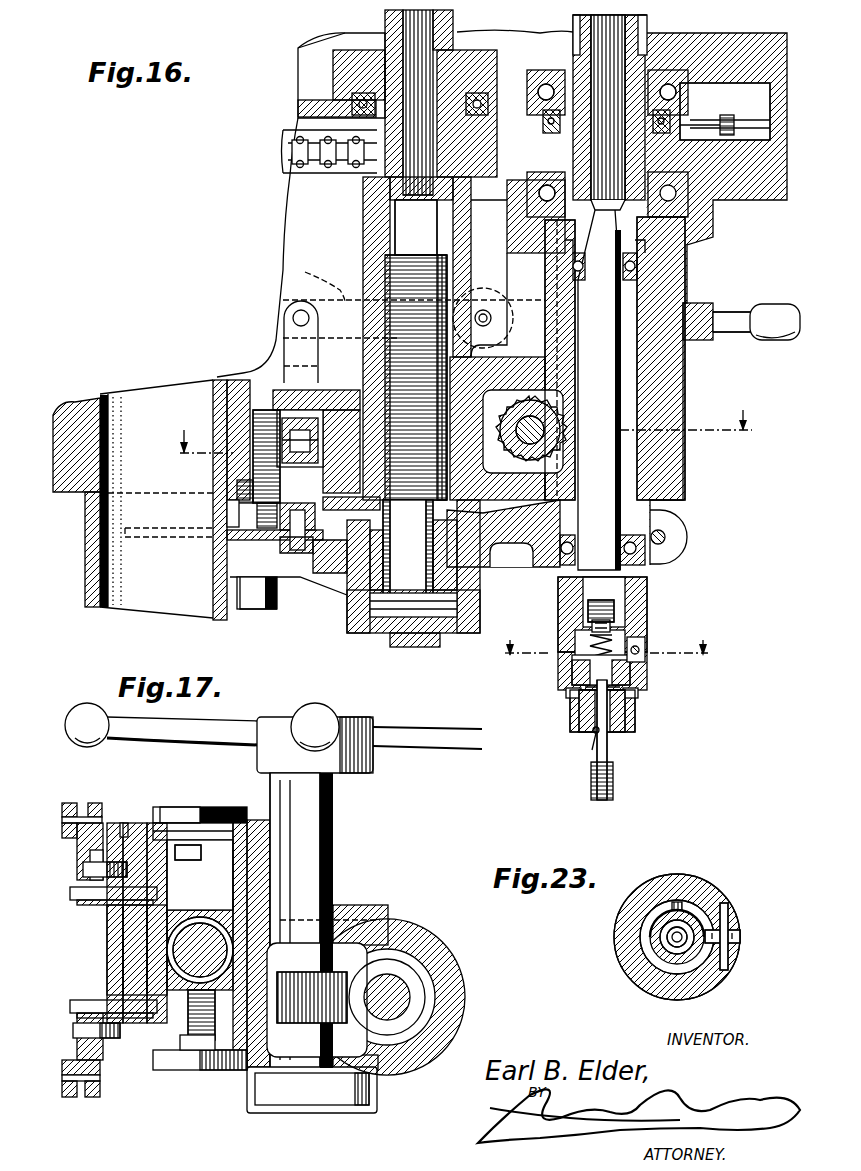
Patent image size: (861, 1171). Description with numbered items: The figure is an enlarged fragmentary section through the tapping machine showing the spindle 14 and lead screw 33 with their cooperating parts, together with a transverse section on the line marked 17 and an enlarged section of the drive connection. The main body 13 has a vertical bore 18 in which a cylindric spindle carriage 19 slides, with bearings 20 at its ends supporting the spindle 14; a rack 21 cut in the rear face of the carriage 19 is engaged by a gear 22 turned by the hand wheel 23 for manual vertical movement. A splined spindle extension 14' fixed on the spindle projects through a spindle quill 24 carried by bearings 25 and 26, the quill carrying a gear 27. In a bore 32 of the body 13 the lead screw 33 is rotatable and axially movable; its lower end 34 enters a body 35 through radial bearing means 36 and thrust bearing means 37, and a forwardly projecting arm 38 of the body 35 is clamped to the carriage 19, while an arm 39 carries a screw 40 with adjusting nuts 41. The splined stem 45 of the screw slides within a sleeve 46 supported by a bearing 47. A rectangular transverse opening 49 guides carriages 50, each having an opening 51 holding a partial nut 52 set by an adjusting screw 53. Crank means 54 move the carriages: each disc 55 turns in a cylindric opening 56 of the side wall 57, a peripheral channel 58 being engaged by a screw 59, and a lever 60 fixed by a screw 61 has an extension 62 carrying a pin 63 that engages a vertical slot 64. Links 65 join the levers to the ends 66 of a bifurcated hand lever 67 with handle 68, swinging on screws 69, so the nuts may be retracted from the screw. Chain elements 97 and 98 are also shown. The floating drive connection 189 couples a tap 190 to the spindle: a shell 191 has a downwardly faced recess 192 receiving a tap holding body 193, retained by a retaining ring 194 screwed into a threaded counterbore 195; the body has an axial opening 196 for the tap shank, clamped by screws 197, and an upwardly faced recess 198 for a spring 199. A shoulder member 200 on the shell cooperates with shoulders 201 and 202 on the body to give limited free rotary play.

In FIG. 16, the main body 13 is at (360, 232).
In FIG. 17, the main body 13 is at (350, 900).
In FIG. 16, the spindle 14 is at (645, 292).
In FIG. 17, the spindle 14 is at (404, 920).
In FIG. 16, the splined spindle extension 14' is at (591, 30).
In FIG. 16, the motor 17 is at (463, 426).
In FIG. 16, the vertical bore 18 is at (645, 285).
In FIG. 16, the spindle carriage 19 is at (640, 365).
In FIG. 17, the spindle carriage 19 is at (430, 960).
In FIG. 16, the bearings 20 is at (650, 262).
In FIG. 16, the rack 21 is at (545, 300).
In FIG. 17, the rack 21 is at (338, 1023).
In FIG. 16, the gear 22 is at (565, 416).
In FIG. 17, the gear 22 is at (345, 972).
In FIG. 16, the hand wheel 23 is at (606, 661).
In FIG. 17, the hand wheel 23 is at (315, 705).
In FIG. 16, the spindle quill 24 is at (633, 80).
In FIG. 16, the bearing 25 is at (546, 84).
In FIG. 16, the bearing 26 is at (540, 193).
In FIG. 16, the gear 27 is at (640, 30).
In FIG. 16, the bore 32 is at (380, 190).
In FIG. 16, the lead screw 33 is at (385, 275).
In FIG. 17, the lead screw 33 is at (180, 965).
In FIG. 16, the lower end of lead screw 34 is at (385, 600).
In FIG. 16, the body 35 is at (462, 600).
In FIG. 16, the radial bearing means 36 is at (345, 590).
In FIG. 16, the thrust bearing means 37 is at (418, 617).
In FIG. 16, the forwardly projecting arm 38 is at (670, 537).
In FIG. 16, the arm 39 is at (270, 580).
In FIG. 16, the screw 40 is at (213, 515).
In FIG. 16, the adjusting nuts 41 is at (227, 478).
In FIG. 16, the splined stem 45 is at (403, 22).
In FIG. 16, the sleeve 46 is at (380, 68).
In FIG. 16, the bearing 47 is at (470, 60).
In FIG. 16, the transverse opening 49 is at (488, 385).
In FIG. 17, the transverse opening 49 is at (173, 958).
In FIG. 16, the carriages 50 is at (348, 500).
In FIG. 17, the carriages 50 is at (235, 855).
In FIG. 17, the opening 51 is at (257, 822).
In FIG. 16, the partial nut 52 is at (416, 500).
In FIG. 17, the partial nut 52 is at (233, 875).
In FIG. 17, the adjusting screw 53 is at (200, 807).
In FIG. 16, the crank means 54 is at (310, 495).
In FIG. 17, the crank means 54 is at (176, 805).
In FIG. 17, the disc 55 is at (140, 822).
In FIG. 17, the cylindric opening 56 is at (115, 822).
In FIG. 17, the side wall 57 is at (107, 935).
In FIG. 17, the peripheral channel 58 is at (107, 920).
In FIG. 17, the screw 59 is at (124, 822).
In FIG. 17, the lever 60 is at (77, 838).
In FIG. 17, the screw 61 is at (83, 870).
In FIG. 17, the extension 62 is at (147, 950).
In FIG. 16, the pin 63 is at (340, 435).
In FIG. 17, the pin 63 is at (70, 893).
In FIG. 16, the vertical slot 64 is at (352, 392).
In FIG. 17, the vertical slot 64 is at (158, 885).
In FIG. 16, the links 65 is at (283, 340).
In FIG. 17, the links 65 is at (70, 802).
In FIG. 16, the ends of hand lever 66 is at (290, 302).
In FIG. 16, the bifurcated hand lever 67 is at (340, 298).
In FIG. 16, the handle 68 is at (778, 305).
In FIG. 16, the screws 69 is at (484, 310).
In FIG. 16, the chain 97 is at (300, 135).
In FIG. 16, the chain 98 is at (715, 125).
In FIG. 16, the floating drive connection 189 is at (656, 586).
In FIG. 23, the floating drive connection 189 is at (612, 952).
In FIG. 16, the tap 190 is at (610, 748).
In FIG. 23, the tap 190 is at (665, 958).
In FIG. 16, the shell 191 is at (650, 580).
In FIG. 23, the shell 191 is at (710, 885).
In FIG. 16, the downwardly faced recess 192 is at (575, 648).
In FIG. 23, the downwardly faced recess 192 is at (645, 930).
In FIG. 16, the tap holding body 193 is at (630, 672).
In FIG. 23, the tap holding body 193 is at (655, 952).
In FIG. 16, the retaining ring 194 is at (648, 720).
In FIG. 16, the threaded counterbore 195 is at (635, 700).
In FIG. 16, the axial opening 196 is at (595, 735).
In FIG. 16, the screws 197 is at (568, 700).
In FIG. 16, the upwardly faced recess 198 is at (585, 665).
In FIG. 23, the upwardly faced recess 198 is at (683, 905).
In FIG. 16, the spring 199 is at (575, 632).
In FIG. 23, the spring 199 is at (660, 930).
In FIG. 16, the shoulder member 200 is at (642, 645).
In FIG. 23, the shoulder member 200 is at (735, 935).
In FIG. 23, the shoulder 201 is at (673, 900).
In FIG. 23, the shoulder 202 is at (725, 965).